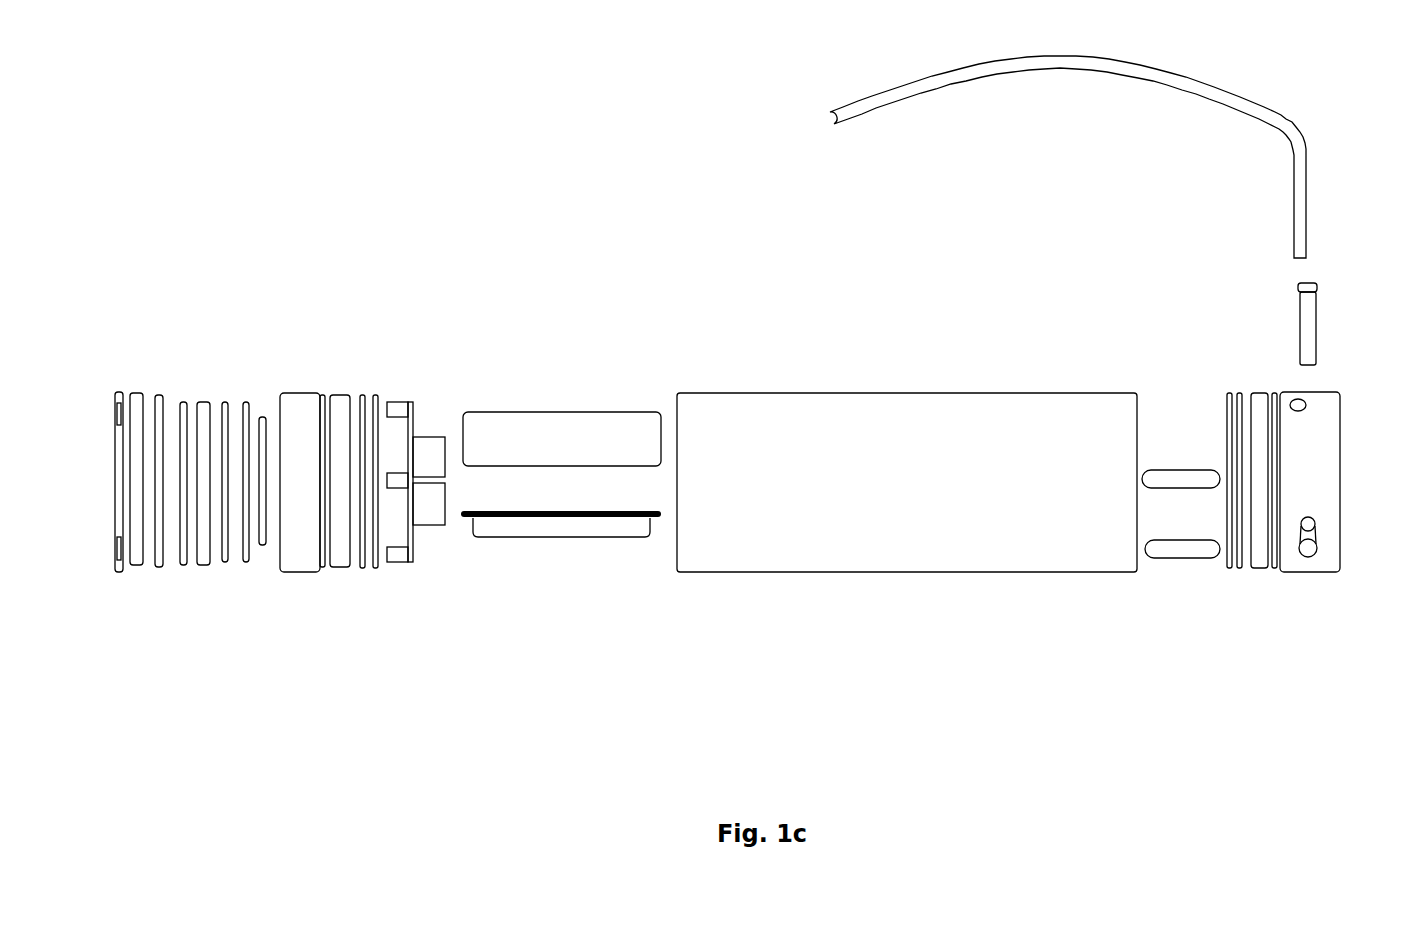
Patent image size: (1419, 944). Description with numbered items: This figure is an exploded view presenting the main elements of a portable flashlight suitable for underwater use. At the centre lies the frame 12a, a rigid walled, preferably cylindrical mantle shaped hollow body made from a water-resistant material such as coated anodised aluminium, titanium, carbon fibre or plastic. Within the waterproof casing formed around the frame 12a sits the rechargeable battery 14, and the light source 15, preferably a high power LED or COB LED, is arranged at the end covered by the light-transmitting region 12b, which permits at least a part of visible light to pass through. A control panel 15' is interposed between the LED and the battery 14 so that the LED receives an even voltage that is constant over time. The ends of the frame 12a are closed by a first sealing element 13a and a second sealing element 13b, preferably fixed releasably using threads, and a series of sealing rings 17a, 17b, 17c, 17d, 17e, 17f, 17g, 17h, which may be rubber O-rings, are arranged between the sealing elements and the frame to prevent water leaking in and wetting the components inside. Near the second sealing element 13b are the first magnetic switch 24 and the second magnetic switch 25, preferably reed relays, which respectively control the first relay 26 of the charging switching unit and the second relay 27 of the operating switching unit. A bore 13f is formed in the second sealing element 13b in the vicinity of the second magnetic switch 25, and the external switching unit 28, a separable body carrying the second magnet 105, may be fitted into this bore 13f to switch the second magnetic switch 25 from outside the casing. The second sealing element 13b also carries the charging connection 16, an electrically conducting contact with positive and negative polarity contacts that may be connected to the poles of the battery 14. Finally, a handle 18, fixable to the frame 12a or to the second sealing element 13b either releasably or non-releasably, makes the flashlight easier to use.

The first sealing element 13a is at (308, 393).
The sealing ring 17a is at (158, 568).
The sealing ring 17b is at (183, 563).
The light-transmitting region 12b is at (203, 567).
The sealing ring 17c is at (227, 563).
The sealing ring 17d is at (245, 563).
The light source 15 is at (318, 549).
The sealing ring 17e is at (362, 568).
The sealing ring 17f is at (380, 568).
The second relay 27 is at (443, 437).
The first relay 26 is at (441, 532).
The rechargeable battery 14 is at (548, 420).
The control panel 15' is at (561, 597).
The frame 12a is at (902, 423).
The second magnetic switch 25 is at (1167, 468).
The first magnetic switch 24 is at (1163, 558).
The sealing ring 17g is at (1228, 568).
The sealing ring 17h is at (1240, 568).
The second sealing element 13b is at (1325, 462).
The bore 13f is at (1307, 403).
The charging connection 16 is at (1307, 556).
The external switching unit 28 is at (1305, 309).
The second magnet 105 is at (1307, 338).
The handle 18 is at (957, 77).